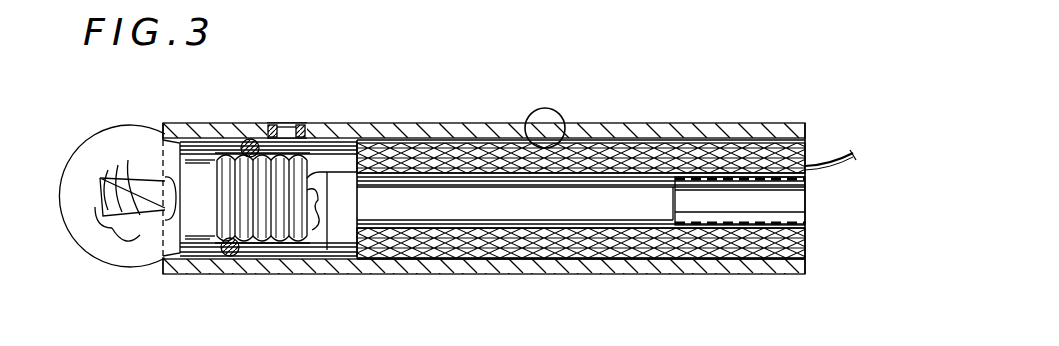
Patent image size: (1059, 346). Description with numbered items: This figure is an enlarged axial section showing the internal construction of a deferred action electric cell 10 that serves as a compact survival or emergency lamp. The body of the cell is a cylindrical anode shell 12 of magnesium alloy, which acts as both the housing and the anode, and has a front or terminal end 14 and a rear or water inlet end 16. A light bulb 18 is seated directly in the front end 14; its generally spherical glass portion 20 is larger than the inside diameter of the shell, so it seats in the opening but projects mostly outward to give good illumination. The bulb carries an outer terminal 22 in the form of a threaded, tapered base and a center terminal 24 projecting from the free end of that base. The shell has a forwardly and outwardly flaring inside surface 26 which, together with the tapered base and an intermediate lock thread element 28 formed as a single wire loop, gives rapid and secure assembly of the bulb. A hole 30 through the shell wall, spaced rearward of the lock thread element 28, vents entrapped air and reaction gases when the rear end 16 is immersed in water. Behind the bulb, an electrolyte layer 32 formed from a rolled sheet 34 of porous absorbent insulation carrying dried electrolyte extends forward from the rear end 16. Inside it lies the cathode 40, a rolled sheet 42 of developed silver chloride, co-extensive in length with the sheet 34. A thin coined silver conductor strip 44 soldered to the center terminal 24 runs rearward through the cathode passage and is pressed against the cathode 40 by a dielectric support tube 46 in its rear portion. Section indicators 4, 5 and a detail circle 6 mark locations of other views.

The deferred action electric cell 10 is at (432, 122).
The cylindrical anode shell 12 is at (482, 123).
The front or terminal end 14 is at (165, 127).
The rear or water inlet end 16 is at (807, 133).
The light bulb 18 is at (78, 138).
The spherical glass portion 20 is at (78, 236).
The outer terminal 22 is at (292, 248).
The center terminal 24 is at (318, 205).
The forwardly and outwardly flaring inside surface 26 is at (257, 254).
The lock thread element 28 is at (222, 258).
The hole 30 is at (277, 124).
The electrolyte layer 32 is at (530, 258).
The rolled sheet of absorbent insulation material 34 is at (563, 262).
The cathode 40 is at (405, 216).
The rolled sheet of silver halide material 42 is at (493, 228).
The conductor strip 44 is at (345, 172).
The dielectric support tube 46 is at (807, 223).
The section line 4- 4 is at (732, 110).
The section line 5- 5 is at (337, 83).
The detail circle FIG. 6 is at (566, 103).